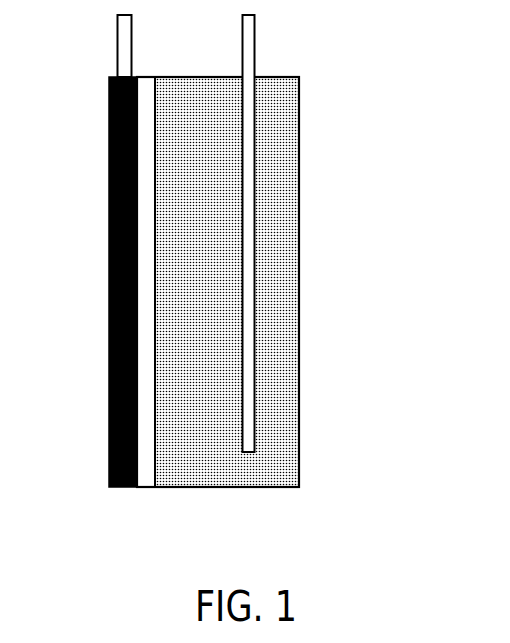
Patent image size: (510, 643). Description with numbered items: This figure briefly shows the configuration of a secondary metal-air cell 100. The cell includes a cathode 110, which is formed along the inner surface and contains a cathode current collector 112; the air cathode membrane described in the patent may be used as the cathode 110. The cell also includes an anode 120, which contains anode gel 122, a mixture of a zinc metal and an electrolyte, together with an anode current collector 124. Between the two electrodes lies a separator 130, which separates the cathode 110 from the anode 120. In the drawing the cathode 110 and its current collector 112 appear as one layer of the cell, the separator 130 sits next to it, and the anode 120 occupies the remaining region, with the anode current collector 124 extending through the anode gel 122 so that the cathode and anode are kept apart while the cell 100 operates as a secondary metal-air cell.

The secondary metal-air cell 100 is at (313, 117).
The cathode 110 is at (109, 256).
The cathode current collector 112 is at (118, 60).
The anode 120 is at (358, 242).
The anode gel 122 is at (263, 469).
The anode current collector 124 is at (255, 327).
The separator 130 is at (147, 481).